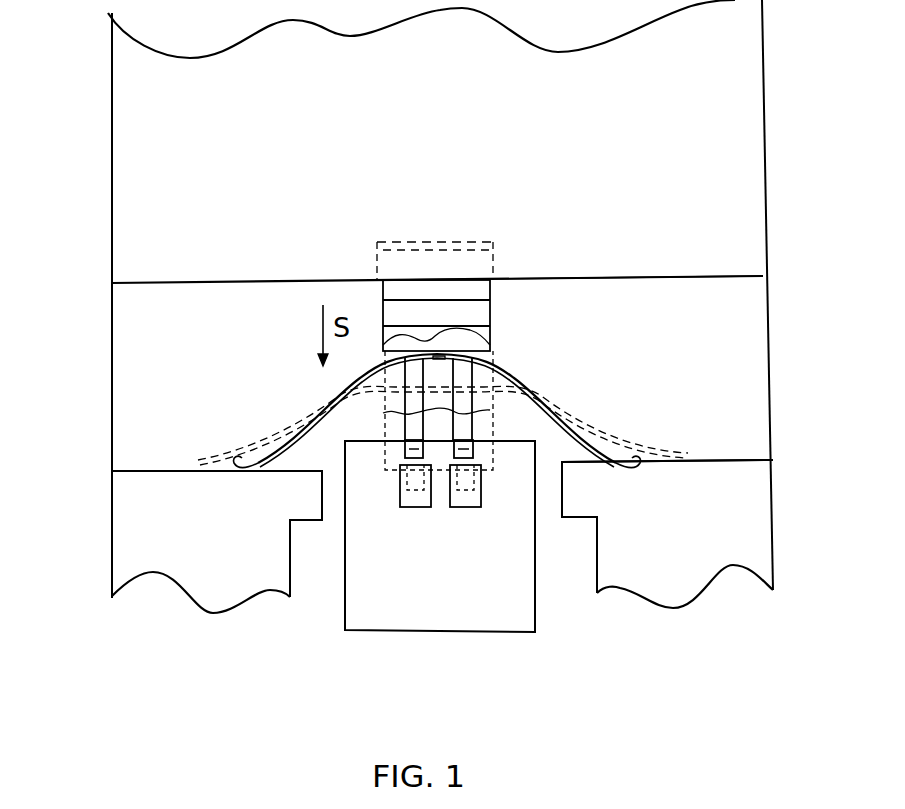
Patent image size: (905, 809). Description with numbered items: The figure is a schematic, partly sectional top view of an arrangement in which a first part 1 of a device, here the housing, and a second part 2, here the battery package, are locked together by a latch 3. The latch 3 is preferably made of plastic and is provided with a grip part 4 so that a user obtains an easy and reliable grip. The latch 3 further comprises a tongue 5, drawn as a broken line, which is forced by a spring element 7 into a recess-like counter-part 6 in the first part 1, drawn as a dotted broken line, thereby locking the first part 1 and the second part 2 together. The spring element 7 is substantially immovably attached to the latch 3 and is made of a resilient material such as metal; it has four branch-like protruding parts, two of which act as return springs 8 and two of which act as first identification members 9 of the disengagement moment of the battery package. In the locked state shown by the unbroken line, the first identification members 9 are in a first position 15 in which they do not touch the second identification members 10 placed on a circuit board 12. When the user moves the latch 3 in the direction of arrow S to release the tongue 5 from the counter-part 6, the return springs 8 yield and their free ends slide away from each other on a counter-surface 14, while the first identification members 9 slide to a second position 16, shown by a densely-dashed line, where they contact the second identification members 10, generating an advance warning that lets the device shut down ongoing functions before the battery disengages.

The first part of the device 1 is at (95, 25).
The second part of the device 2 is at (95, 290).
The latch 3 is at (539, 327).
The grip part 4 is at (467, 312).
The tongue 5 is at (403, 266).
The counter-part of the tongue 6 is at (432, 245).
The spring element 7 is at (246, 386).
The return springs 8 is at (332, 397).
The first identification members 9 is at (415, 393).
The second identification members 10 is at (410, 500).
The circuit board 12 is at (476, 622).
The counter-surface 14 is at (178, 468).
The first position 15 is at (482, 449).
The second position 16 is at (487, 480).